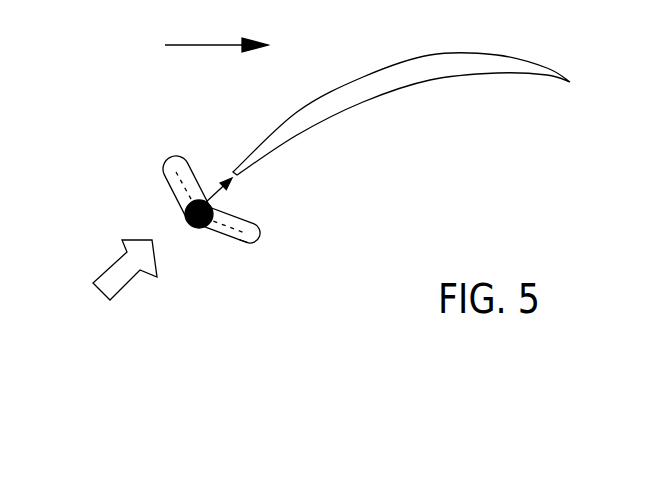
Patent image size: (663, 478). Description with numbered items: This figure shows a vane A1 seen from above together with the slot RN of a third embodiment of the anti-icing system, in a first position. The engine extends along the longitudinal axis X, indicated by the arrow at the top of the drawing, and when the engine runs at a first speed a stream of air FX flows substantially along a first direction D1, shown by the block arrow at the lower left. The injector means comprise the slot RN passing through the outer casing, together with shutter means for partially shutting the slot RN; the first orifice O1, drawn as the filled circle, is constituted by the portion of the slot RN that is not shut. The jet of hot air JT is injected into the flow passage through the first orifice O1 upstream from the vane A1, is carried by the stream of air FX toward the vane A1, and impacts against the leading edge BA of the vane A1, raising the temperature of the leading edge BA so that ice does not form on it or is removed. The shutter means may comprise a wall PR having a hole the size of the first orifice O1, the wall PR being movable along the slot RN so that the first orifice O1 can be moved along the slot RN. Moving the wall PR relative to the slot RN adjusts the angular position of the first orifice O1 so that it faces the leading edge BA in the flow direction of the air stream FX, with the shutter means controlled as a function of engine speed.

The longitudinal axis X is at (216, 36).
The vane A1 is at (409, 83).
The slot RN is at (266, 252).
The jet of hot air JT is at (216, 170).
The first orifice O1 is at (178, 214).
The leading edge BA is at (248, 180).
The wall PR is at (243, 251).
The stream of air FX is at (116, 281).
The first direction D1 is at (125, 281).